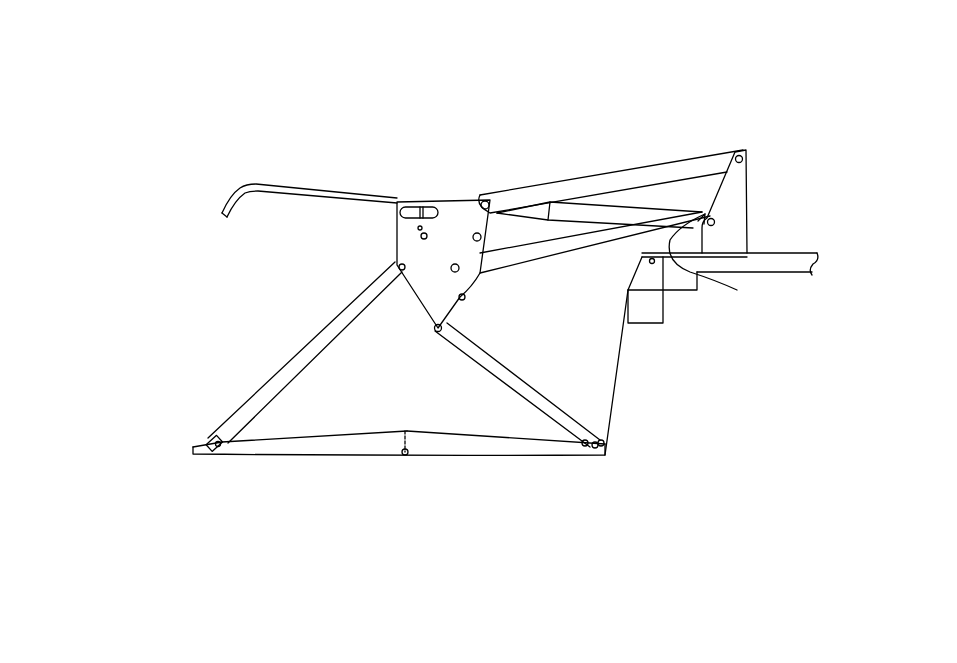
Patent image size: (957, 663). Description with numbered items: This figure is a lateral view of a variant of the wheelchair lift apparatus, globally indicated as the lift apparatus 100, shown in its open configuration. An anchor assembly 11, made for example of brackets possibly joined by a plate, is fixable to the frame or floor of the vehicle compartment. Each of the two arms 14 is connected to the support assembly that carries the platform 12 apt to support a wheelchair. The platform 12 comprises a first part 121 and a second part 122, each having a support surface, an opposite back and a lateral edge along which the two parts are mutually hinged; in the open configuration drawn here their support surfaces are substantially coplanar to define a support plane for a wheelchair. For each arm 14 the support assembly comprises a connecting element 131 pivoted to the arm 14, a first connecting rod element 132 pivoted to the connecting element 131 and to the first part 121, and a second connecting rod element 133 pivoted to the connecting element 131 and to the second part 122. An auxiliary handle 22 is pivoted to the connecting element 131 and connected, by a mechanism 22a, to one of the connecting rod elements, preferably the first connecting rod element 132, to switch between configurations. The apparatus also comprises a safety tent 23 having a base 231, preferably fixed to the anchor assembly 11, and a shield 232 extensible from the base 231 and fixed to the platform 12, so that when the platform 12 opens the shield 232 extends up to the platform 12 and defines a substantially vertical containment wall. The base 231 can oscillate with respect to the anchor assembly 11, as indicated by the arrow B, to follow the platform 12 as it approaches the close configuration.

The lift apparatus 100 is at (218, 123).
The anchor assembly 11 is at (748, 213).
The platform 12 is at (322, 462).
The first part 121 is at (322, 443).
The second part 122 is at (478, 440).
The connecting element 131 is at (400, 250).
The first connecting rod element 132 is at (328, 328).
The second connecting rod element 133 is at (497, 370).
The arm 14 is at (635, 167).
The auxiliary handle 22 is at (300, 188).
The mechanism 22a is at (437, 210).
The safety tent 23 is at (720, 317).
The base 231 is at (676, 262).
The shield 232 is at (620, 377).
The arrow B is at (712, 262).